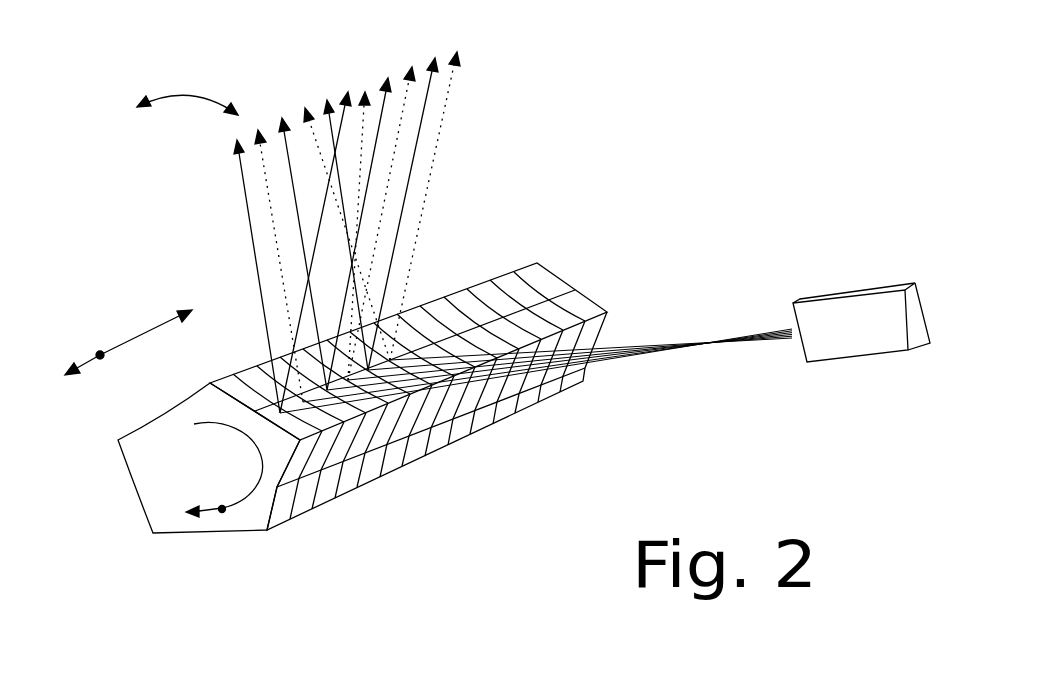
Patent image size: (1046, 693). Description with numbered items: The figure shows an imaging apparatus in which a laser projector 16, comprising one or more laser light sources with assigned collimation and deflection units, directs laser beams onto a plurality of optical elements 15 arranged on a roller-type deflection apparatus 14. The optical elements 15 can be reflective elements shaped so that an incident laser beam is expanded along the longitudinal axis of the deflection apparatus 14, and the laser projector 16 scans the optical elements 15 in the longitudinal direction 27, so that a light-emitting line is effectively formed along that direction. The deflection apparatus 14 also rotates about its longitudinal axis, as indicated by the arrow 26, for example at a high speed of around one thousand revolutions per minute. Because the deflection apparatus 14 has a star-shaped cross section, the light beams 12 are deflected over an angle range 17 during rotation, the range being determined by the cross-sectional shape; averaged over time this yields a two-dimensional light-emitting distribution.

The light beams 12 is at (454, 77).
The roller-type deflection apparatus 14 is at (140, 488).
The optical elements 15 is at (452, 423).
The laser projector 16 is at (843, 312).
The angle range 17 is at (207, 71).
The arrow 26 is at (225, 513).
The longitudinal direction 27 is at (103, 351).